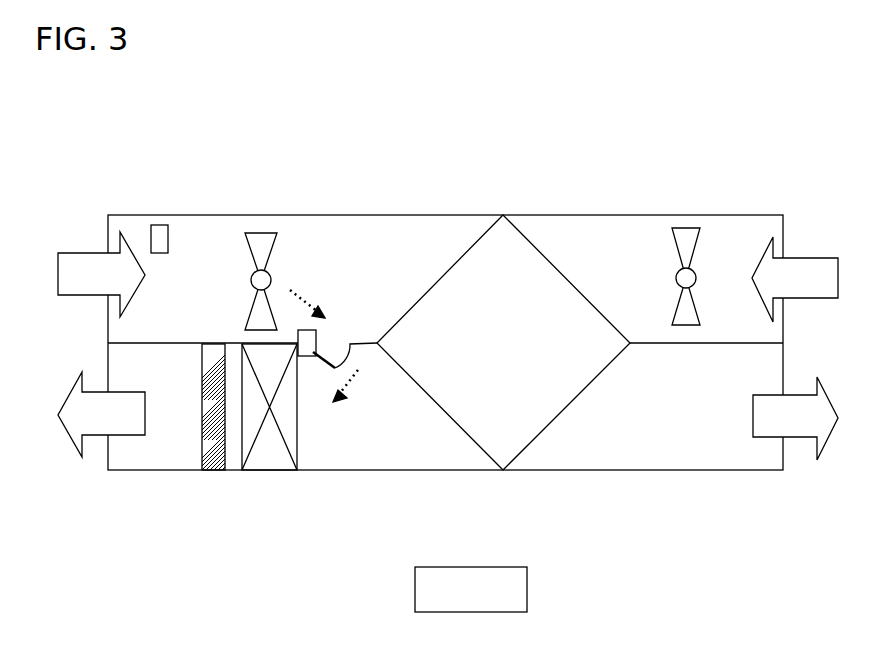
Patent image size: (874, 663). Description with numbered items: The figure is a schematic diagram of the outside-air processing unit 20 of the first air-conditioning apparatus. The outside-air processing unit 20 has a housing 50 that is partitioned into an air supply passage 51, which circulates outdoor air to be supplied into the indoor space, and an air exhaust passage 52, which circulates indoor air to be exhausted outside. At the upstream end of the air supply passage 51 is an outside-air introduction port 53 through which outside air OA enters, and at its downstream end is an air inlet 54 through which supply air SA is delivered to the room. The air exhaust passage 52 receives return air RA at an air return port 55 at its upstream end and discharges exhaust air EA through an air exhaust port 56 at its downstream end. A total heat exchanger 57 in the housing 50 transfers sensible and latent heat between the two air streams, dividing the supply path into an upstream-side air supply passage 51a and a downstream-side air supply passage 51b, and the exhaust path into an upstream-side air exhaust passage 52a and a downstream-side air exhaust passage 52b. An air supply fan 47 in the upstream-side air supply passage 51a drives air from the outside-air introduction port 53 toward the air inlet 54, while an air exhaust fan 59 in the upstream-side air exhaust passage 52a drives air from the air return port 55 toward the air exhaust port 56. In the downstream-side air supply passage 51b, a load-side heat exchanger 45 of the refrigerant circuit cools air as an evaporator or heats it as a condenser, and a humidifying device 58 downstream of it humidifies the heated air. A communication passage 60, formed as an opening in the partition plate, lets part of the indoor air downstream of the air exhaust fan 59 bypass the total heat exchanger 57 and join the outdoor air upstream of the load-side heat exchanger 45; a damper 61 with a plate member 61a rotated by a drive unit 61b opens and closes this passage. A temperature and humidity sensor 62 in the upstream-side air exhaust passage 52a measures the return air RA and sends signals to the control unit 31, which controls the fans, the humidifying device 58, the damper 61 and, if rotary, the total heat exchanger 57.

The outside-air processing unit 20 is at (512, 153).
The control unit 31 is at (527, 590).
The load-side heat exchanger 45 is at (270, 452).
The air supply fan 47 is at (686, 228).
The housing 50 is at (384, 215).
The air supply passage 51 is at (569, 240).
The upstream-side air supply passage 51a is at (622, 240).
The downstream-side air supply passage 51b is at (408, 450).
The air exhaust passage 52 is at (572, 448).
The upstream-side air exhaust passage 52a is at (322, 243).
The downstream-side air exhaust passage 52b is at (632, 448).
The outside-air introduction port 53 is at (783, 248).
The air inlet 54 is at (108, 378).
The air return port 55 is at (108, 248).
The air exhaust port 56 is at (783, 378).
The total heat exchanger 57 is at (465, 250).
The humidifying device 58 is at (215, 470).
The air exhaust fan 59 is at (262, 233).
The communication passage 60 is at (339, 338).
The damper 61 is at (335, 441).
The plate member 61a is at (325, 369).
The drive unit 61b is at (305, 357).
The temperature and humidity sensor 62 is at (158, 225).